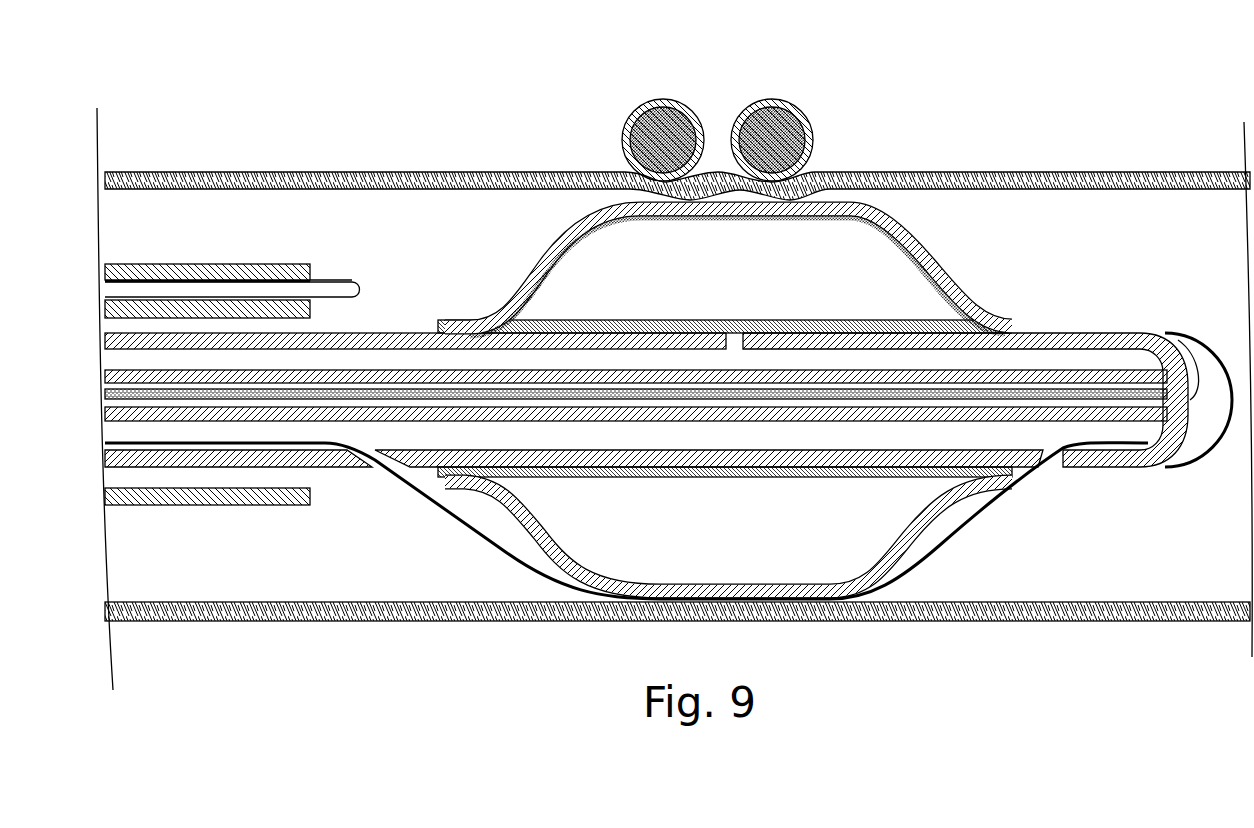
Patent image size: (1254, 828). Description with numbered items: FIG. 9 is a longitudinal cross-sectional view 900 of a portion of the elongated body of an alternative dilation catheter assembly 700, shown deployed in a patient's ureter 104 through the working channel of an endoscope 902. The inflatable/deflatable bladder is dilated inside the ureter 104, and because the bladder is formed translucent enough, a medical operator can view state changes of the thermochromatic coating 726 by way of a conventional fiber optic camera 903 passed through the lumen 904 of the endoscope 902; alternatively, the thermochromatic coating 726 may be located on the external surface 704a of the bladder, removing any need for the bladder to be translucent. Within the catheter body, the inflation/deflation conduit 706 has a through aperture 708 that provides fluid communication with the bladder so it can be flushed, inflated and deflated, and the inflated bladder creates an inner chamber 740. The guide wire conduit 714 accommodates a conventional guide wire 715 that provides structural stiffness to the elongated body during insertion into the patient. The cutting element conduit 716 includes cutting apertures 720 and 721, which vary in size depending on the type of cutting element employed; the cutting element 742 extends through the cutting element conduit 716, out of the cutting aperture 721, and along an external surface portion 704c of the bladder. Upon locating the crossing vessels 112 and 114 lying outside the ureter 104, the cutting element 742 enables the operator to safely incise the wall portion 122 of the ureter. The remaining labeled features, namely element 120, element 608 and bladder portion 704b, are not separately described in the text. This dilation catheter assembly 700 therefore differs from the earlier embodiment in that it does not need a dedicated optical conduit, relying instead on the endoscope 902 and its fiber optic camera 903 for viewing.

The longitudinal cross-sectional view 900 is at (964, 86).
The ureter 104 is at (386, 166).
The crossing vessel 112 is at (780, 100).
The crossing vessel 114 is at (670, 100).
The vessel 120 is at (1033, 192).
The wall portion 122 is at (1043, 600).
The endoscope 902 is at (167, 252).
The fiber optic camera 903 is at (340, 283).
The lumen 904 is at (312, 282).
The sheath 608 is at (316, 478).
The dilation catheter assembly 700 is at (1146, 272).
The external surface 704a is at (876, 216).
The balloon inner coating 704b is at (862, 232).
The external surface portion 704c is at (944, 510).
The inflation/deflation conduit 706 is at (1090, 358).
The through aperture 708 is at (732, 338).
The guide wire conduit 714 is at (1186, 404).
The guide wire 715 is at (1192, 388).
The cutting element conduit 716 is at (655, 432).
The cutting aperture 720 is at (395, 465).
The cutting aperture 721 is at (1060, 470).
The thermochromatic coating 726 is at (630, 232).
The inner chamber 740 is at (672, 310).
The cutting element 742 is at (1000, 506).